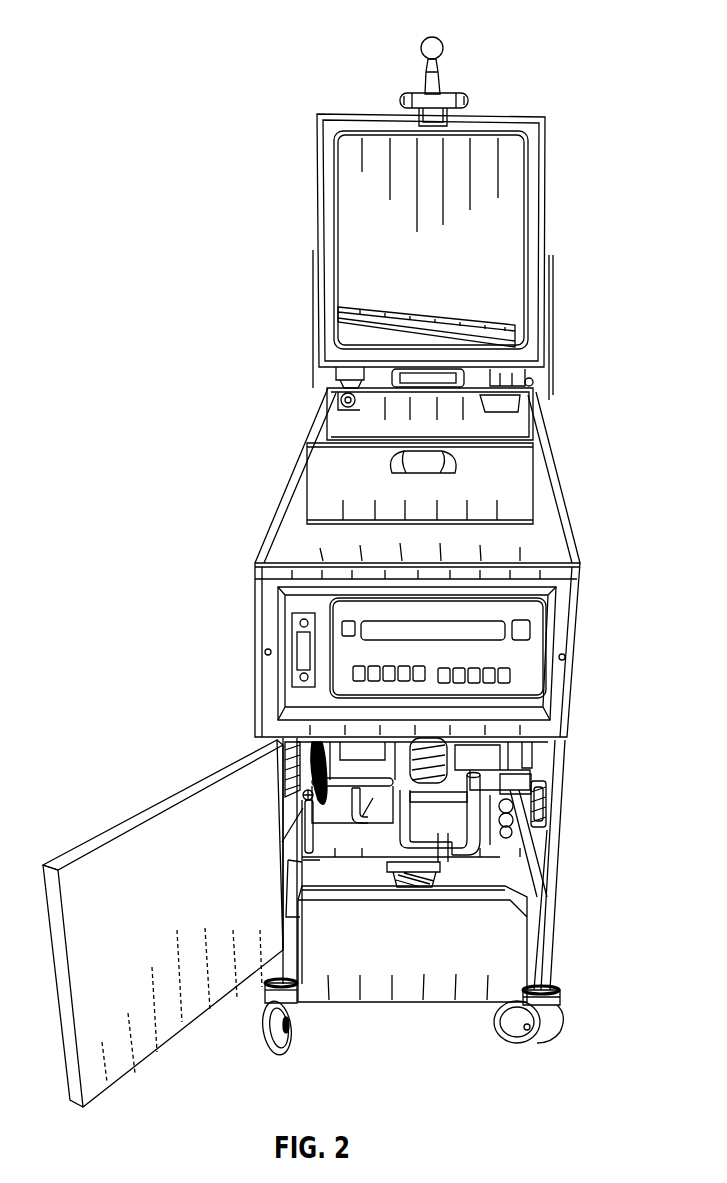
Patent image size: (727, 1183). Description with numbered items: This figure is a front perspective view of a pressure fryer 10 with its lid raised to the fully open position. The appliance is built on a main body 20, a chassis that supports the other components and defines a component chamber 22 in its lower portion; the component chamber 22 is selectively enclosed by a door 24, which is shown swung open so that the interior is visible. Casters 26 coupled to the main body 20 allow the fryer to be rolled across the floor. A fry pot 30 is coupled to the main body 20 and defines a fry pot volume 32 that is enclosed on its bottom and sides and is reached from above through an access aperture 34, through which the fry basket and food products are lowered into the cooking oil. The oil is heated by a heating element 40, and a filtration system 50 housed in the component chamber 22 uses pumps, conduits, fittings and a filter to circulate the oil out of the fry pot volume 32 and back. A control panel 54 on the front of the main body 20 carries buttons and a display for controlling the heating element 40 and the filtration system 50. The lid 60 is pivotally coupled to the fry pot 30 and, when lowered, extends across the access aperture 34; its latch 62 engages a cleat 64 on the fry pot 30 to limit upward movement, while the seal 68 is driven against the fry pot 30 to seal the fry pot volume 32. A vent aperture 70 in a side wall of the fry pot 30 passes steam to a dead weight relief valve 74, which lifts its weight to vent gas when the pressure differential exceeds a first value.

The pressure fryer 10 is at (573, 48).
The main body 20 is at (572, 659).
The component chamber 22 is at (527, 752).
The door 24 is at (158, 807).
The casters 26 is at (276, 1057).
The fry pot 30 is at (525, 485).
The fry pot volume 32 is at (516, 432).
The access aperture 34 is at (341, 431).
The heating element 40 is at (546, 812).
The filtration system 50 is at (380, 808).
The control panel 54 is at (360, 645).
The lid 60 is at (505, 152).
The latch 62 is at (442, 41).
The cleat 64 is at (390, 467).
The seal 68 is at (530, 208).
The vent aperture 70 is at (340, 397).
The dead weight relief valve 74 is at (343, 373).